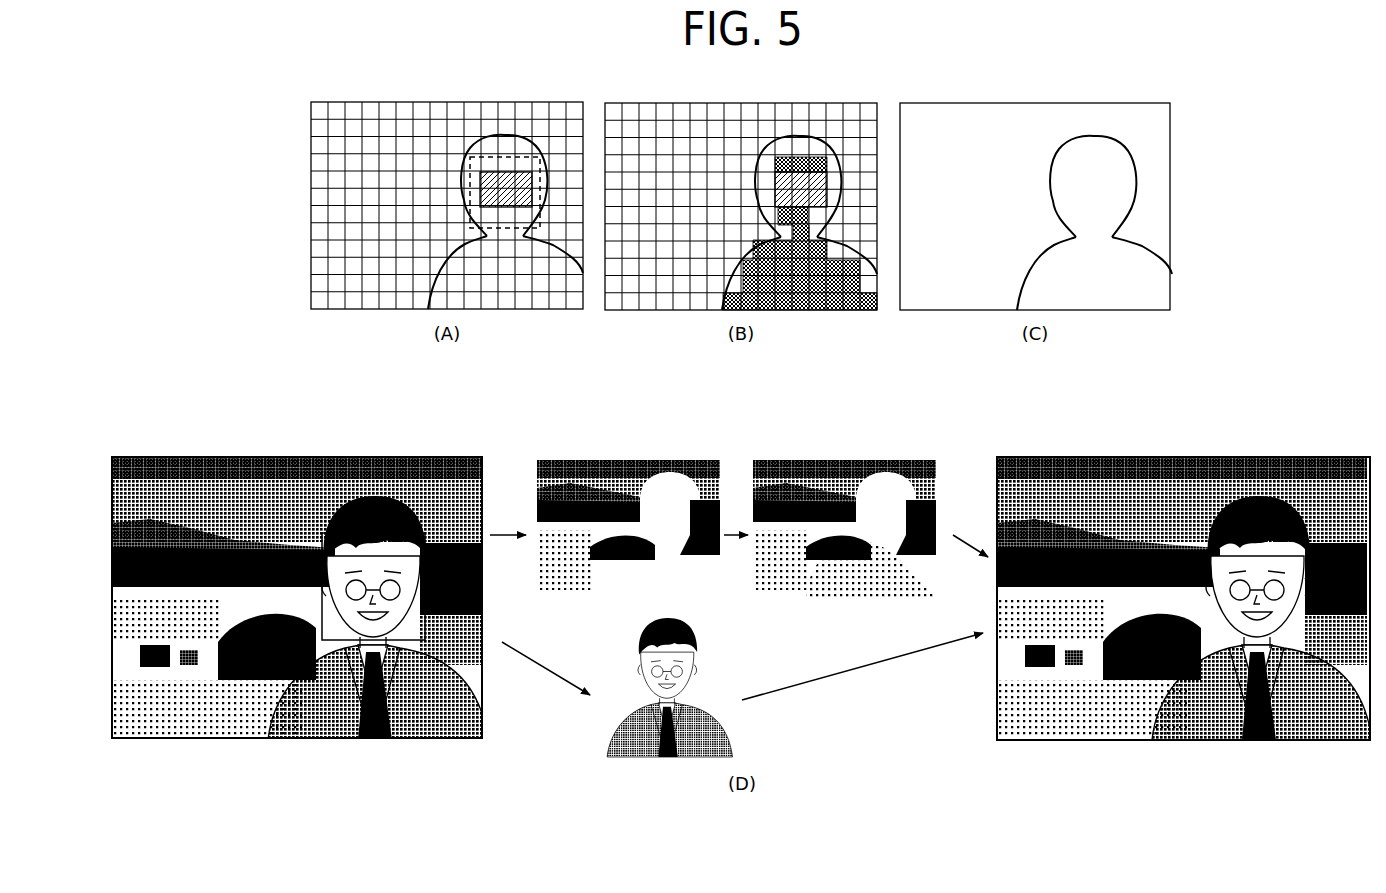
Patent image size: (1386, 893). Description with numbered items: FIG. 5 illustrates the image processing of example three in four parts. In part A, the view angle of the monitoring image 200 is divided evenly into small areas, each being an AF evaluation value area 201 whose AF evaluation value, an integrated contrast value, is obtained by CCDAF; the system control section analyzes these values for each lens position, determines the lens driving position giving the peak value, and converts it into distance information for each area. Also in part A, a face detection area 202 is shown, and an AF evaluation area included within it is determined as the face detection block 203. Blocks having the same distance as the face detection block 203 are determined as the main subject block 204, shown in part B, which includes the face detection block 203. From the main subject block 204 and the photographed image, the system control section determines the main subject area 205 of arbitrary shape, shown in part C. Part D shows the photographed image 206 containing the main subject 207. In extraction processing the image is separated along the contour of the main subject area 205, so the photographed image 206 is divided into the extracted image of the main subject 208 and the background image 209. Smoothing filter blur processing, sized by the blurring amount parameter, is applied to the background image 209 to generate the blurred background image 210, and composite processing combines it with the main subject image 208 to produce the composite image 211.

The view angle of the monitoring image 200 is at (556, 103).
The AF evaluation value area 201 is at (340, 102).
The face detection area 202 is at (492, 152).
The face detection block 203 is at (486, 188).
The main subject block 204 is at (777, 300).
The main subject area 205 is at (1130, 133).
The photographed image 206 is at (150, 457).
The main subject 207 is at (413, 527).
The extracted image of the main subject 208 is at (697, 663).
The background image 209 is at (585, 459).
The blurred background image 210 is at (795, 459).
The composite image 211 is at (1062, 457).